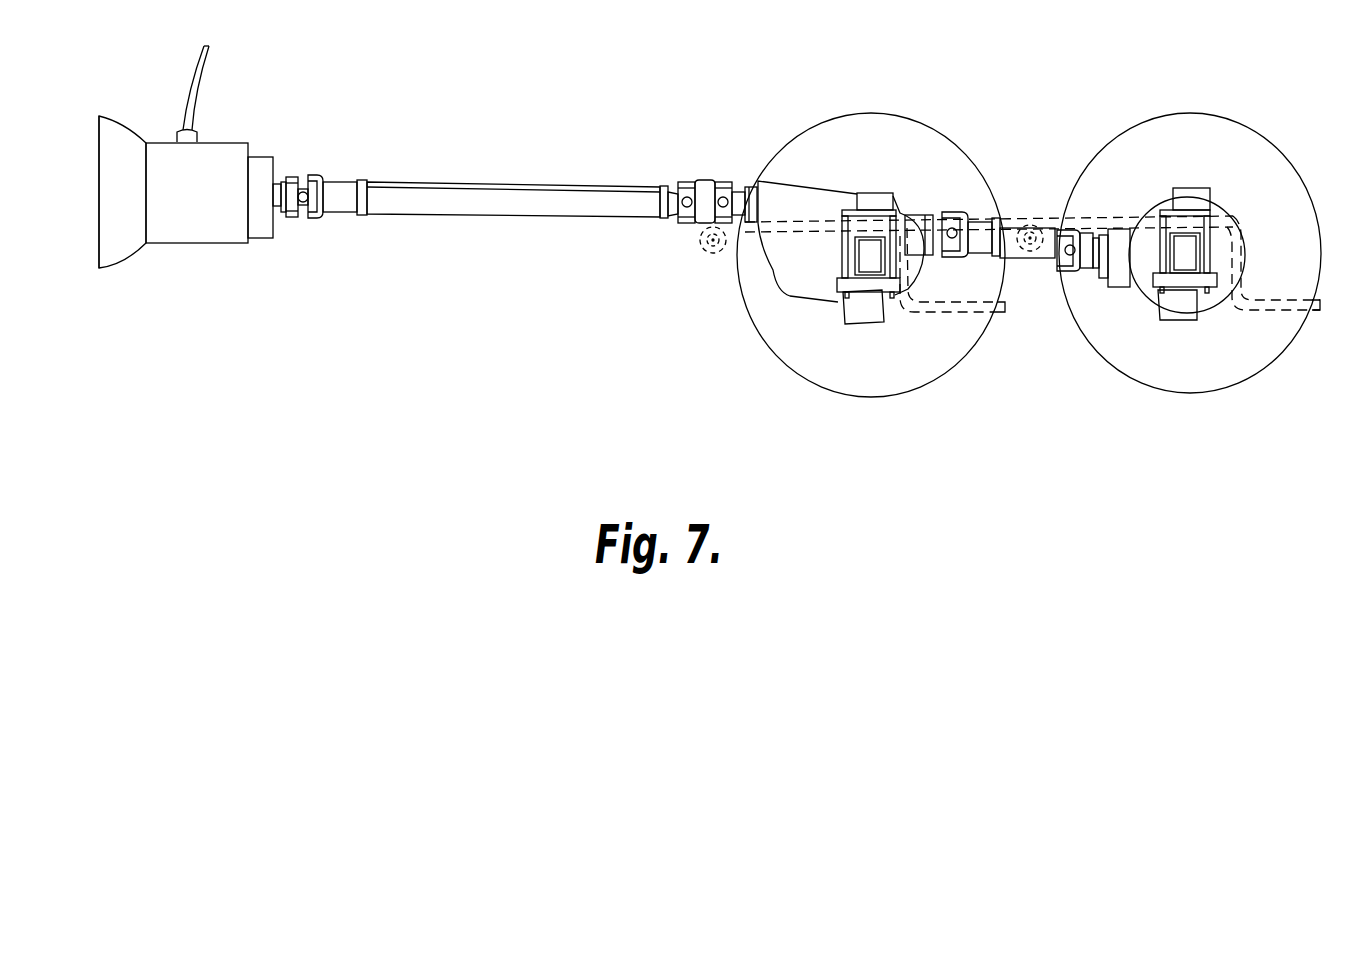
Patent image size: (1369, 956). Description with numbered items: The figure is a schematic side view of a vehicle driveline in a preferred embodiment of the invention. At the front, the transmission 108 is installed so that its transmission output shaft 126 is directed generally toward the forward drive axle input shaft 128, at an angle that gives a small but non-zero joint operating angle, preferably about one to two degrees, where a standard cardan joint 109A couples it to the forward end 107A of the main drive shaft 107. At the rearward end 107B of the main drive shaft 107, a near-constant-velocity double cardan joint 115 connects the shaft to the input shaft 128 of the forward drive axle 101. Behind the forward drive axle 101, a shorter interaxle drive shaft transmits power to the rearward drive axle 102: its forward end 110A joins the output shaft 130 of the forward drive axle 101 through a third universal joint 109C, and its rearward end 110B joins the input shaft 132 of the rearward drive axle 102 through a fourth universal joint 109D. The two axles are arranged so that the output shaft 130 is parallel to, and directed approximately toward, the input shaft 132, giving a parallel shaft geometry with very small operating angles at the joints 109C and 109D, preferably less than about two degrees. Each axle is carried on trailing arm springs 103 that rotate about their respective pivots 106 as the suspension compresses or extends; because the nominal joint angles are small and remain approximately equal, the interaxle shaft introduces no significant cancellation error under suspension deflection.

The forward drive axle 101 is at (822, 274).
The rearward drive axle 102 is at (1177, 300).
The trailing arm springs 103 is at (967, 312).
The pivots 106 is at (706, 253).
The main drive shaft 107 is at (462, 203).
The forward end of the main drive shaft 107A is at (337, 182).
The rearward end of the main drive shaft 107B is at (642, 202).
The transmission 108 is at (210, 203).
The cardan joint 109A is at (307, 218).
The third universal joint 109C is at (968, 212).
The fourth universal joint 109D is at (1070, 277).
The forward end of the interaxle drive shaft 110A is at (986, 218).
The rearward end of the interaxle drive shaft 110B is at (1053, 230).
The double cardan joint 115 is at (700, 181).
The transmission output shaft 126 is at (282, 181).
The input shaft of the forward drive axle 128 is at (752, 187).
The output shaft of the forward drive axle 130 is at (927, 212).
The input shaft of the rearward drive axle 132 is at (1093, 278).